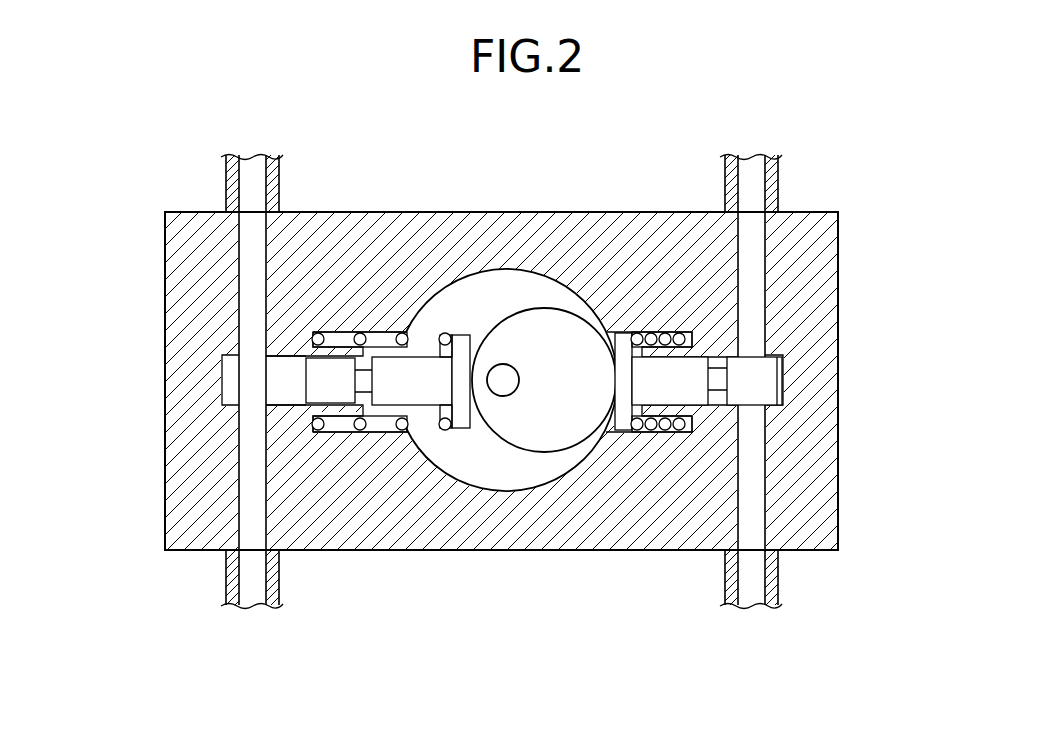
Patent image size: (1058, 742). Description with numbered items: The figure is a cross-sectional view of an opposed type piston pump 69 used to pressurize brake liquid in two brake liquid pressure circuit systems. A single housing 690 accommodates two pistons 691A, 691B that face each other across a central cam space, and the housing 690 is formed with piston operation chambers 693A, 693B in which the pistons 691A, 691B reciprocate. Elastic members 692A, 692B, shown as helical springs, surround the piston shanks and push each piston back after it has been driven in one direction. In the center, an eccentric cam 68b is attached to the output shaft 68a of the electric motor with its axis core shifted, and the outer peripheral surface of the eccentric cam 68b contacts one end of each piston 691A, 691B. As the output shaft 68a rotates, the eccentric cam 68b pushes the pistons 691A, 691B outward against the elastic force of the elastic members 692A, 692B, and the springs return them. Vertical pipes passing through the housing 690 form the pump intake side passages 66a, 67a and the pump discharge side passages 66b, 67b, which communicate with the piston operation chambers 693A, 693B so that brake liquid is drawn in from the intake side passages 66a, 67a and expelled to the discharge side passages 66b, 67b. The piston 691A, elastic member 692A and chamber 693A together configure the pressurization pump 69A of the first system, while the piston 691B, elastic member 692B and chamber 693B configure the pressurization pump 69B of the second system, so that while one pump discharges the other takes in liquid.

The opposed type piston pump 69 is at (890, 198).
The housing 690 is at (840, 311).
The pump intake side passage 66a is at (280, 578).
The pump discharge side passage 66b is at (279, 183).
The pump intake side passage 67a is at (779, 578).
The pump discharge side passage 67b is at (778, 178).
The output shaft 68a is at (491, 367).
The eccentric cam 68b is at (528, 307).
The pressurization pump 69A is at (510, 654).
The pressurization pump 69B is at (825, 654).
The piston 691A is at (458, 428).
The piston 691B is at (623, 417).
The elastic member 692A is at (443, 432).
The elastic member 692B is at (671, 432).
The piston operation chamber 693A is at (250, 381).
The piston operation chamber 693B is at (718, 363).